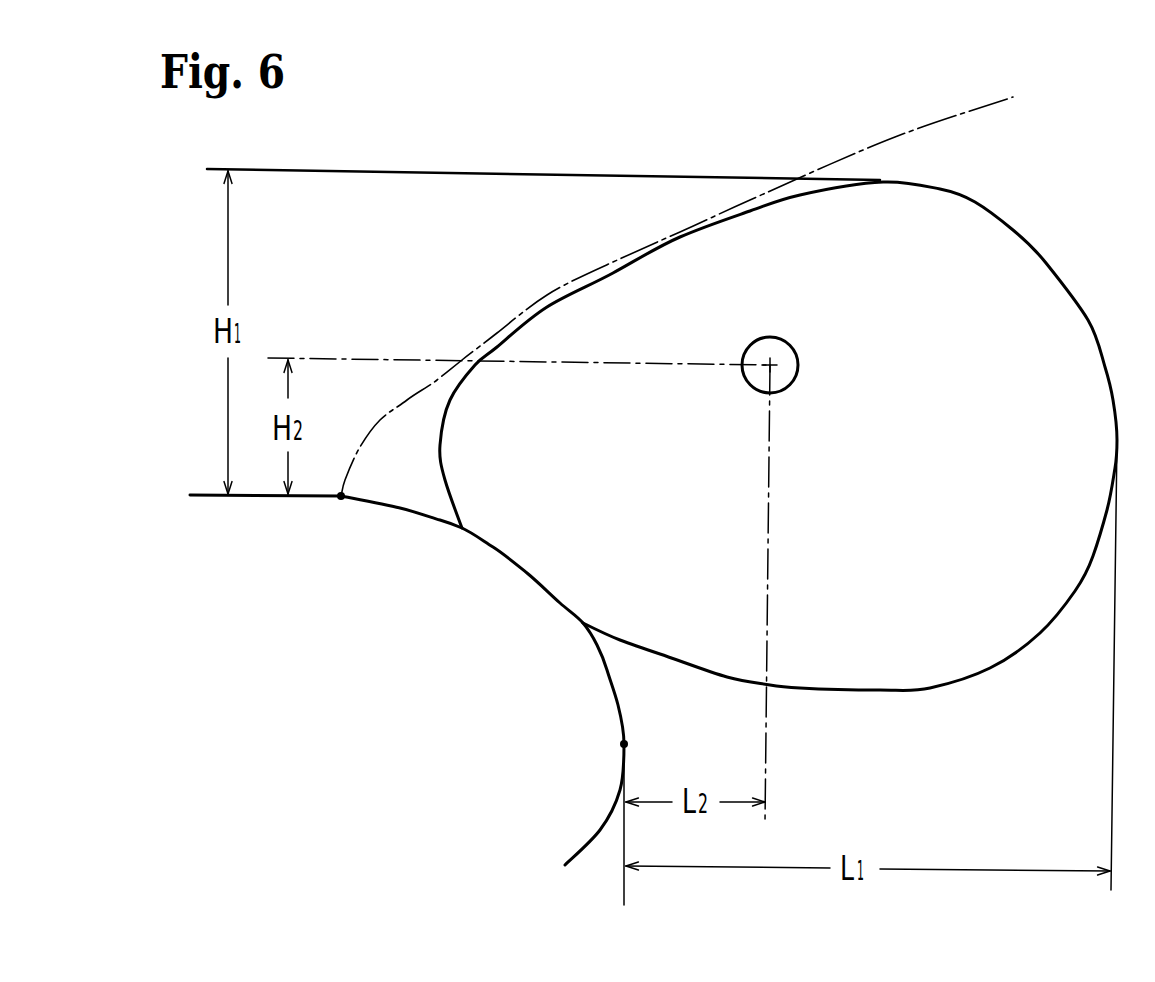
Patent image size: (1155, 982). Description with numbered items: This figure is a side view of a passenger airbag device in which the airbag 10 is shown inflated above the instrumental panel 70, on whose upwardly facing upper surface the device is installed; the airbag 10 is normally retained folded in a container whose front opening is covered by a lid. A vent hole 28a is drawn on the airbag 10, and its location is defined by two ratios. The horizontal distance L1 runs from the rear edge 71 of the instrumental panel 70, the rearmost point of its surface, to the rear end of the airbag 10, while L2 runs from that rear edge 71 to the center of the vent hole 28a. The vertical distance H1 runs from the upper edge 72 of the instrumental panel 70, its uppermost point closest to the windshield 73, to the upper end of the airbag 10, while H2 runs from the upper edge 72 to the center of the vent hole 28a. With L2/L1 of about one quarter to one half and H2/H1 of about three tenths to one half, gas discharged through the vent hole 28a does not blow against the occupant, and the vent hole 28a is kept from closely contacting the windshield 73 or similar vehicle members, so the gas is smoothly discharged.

The airbag 10 is at (1003, 212).
The vent hole 28a is at (792, 350).
The instrumental panel 70 is at (608, 657).
The rear edge of the instrumental panel 71 is at (622, 745).
The upper edge of the instrumental panel 72 is at (341, 496).
The windshield 73 is at (894, 136).